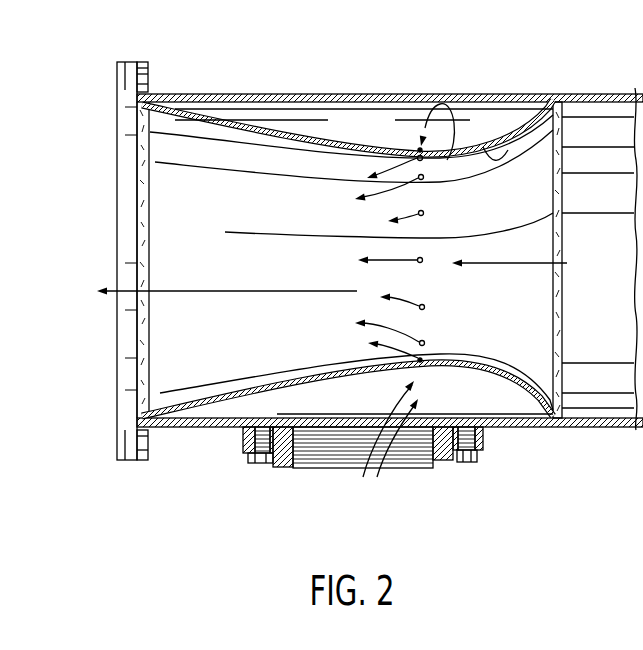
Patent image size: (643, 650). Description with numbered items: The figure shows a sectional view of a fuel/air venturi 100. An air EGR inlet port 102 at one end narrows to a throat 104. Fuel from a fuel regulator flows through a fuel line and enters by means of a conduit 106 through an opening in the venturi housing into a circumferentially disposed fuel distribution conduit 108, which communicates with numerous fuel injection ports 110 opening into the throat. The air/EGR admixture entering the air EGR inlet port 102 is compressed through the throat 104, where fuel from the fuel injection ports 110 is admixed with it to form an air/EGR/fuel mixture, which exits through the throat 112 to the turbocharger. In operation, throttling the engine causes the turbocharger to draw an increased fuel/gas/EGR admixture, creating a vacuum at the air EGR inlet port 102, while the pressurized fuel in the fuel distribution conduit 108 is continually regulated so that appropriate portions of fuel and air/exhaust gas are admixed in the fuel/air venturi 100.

The fuel/air venturi 100 is at (367, 28).
The air EGR inlet port 102 is at (540, 172).
The throat 104 is at (517, 140).
The conduit 106 is at (412, 457).
The circumferentially disposed fuel distribution conduit 108 is at (470, 112).
The fuel injection ports 110 is at (428, 213).
The throat 112 is at (235, 155).